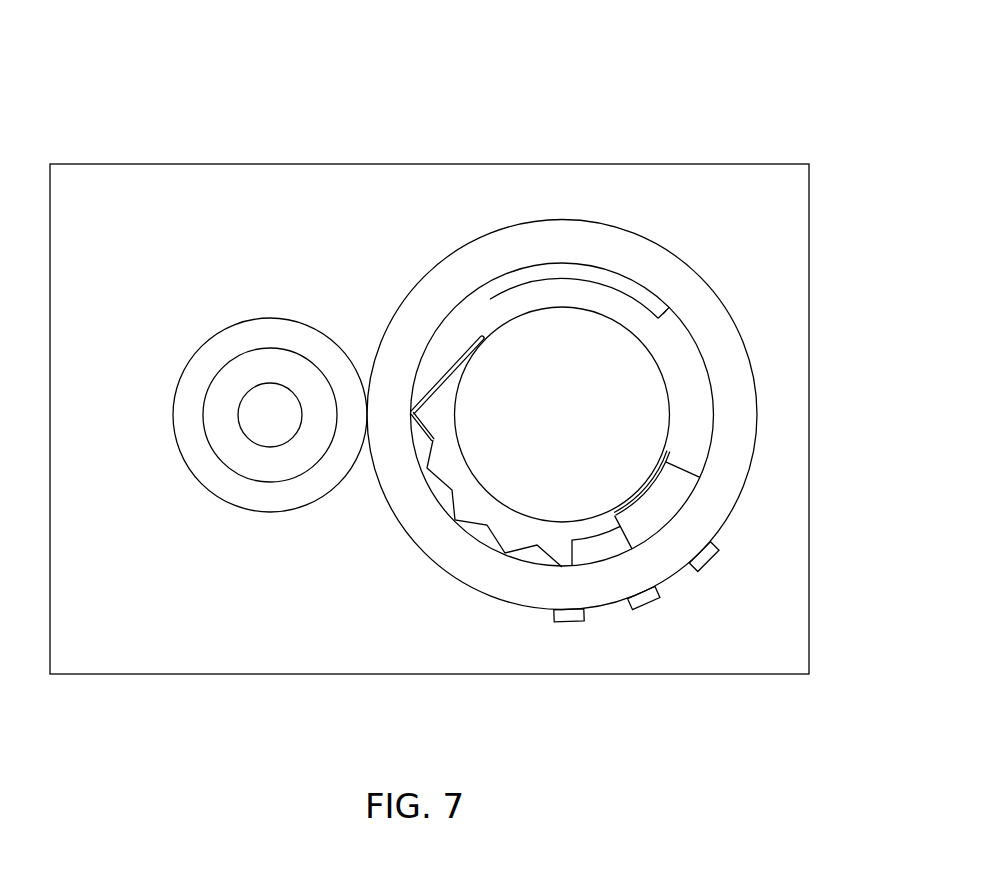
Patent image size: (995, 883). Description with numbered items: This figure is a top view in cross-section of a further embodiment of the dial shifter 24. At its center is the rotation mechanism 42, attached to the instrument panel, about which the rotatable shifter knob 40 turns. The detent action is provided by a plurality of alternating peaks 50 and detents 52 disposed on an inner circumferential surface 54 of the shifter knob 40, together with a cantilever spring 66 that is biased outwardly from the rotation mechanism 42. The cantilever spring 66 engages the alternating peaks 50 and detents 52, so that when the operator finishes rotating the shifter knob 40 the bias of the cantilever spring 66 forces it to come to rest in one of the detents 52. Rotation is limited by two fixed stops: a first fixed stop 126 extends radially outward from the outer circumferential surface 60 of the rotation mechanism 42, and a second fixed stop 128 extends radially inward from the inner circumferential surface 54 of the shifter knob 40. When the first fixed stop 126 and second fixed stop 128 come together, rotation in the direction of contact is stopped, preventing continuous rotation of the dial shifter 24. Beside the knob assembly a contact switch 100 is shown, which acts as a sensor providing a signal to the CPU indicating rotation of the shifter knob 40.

The dial shifter 24 is at (665, 113).
The shifter knob 40 is at (680, 273).
The rotation mechanism 42 is at (625, 370).
The peaks 50 is at (430, 478).
The detents 52 is at (618, 272).
The inner circumferential surface 54 is at (514, 296).
The outer circumferential surface 60 is at (667, 448).
The cantilever spring 66 is at (432, 388).
The contact switch 100 is at (288, 333).
The first fixed stop 126 is at (660, 313).
The second fixed stop 128 is at (640, 497).